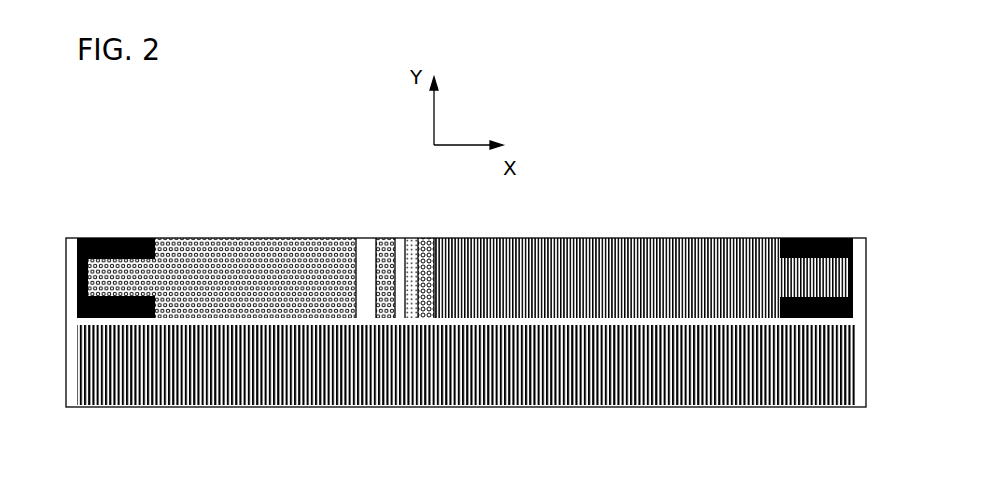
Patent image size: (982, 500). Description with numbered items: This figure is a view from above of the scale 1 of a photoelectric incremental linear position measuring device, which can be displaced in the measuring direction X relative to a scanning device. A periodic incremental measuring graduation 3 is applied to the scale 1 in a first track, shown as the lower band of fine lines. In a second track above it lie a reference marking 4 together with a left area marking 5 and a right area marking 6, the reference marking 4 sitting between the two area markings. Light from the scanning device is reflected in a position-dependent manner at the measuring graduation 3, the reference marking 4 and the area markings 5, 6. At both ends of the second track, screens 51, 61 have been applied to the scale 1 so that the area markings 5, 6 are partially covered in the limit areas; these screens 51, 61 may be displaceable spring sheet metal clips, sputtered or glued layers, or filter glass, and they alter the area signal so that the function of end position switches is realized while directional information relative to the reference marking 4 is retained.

The scale 1 is at (724, 407).
The incremental measuring graduation 3 is at (456, 386).
The reference marking 4 is at (437, 228).
The area marking 5 is at (276, 254).
The screen 51 is at (112, 238).
The area marking 6 is at (623, 238).
The screen 61 is at (810, 238).